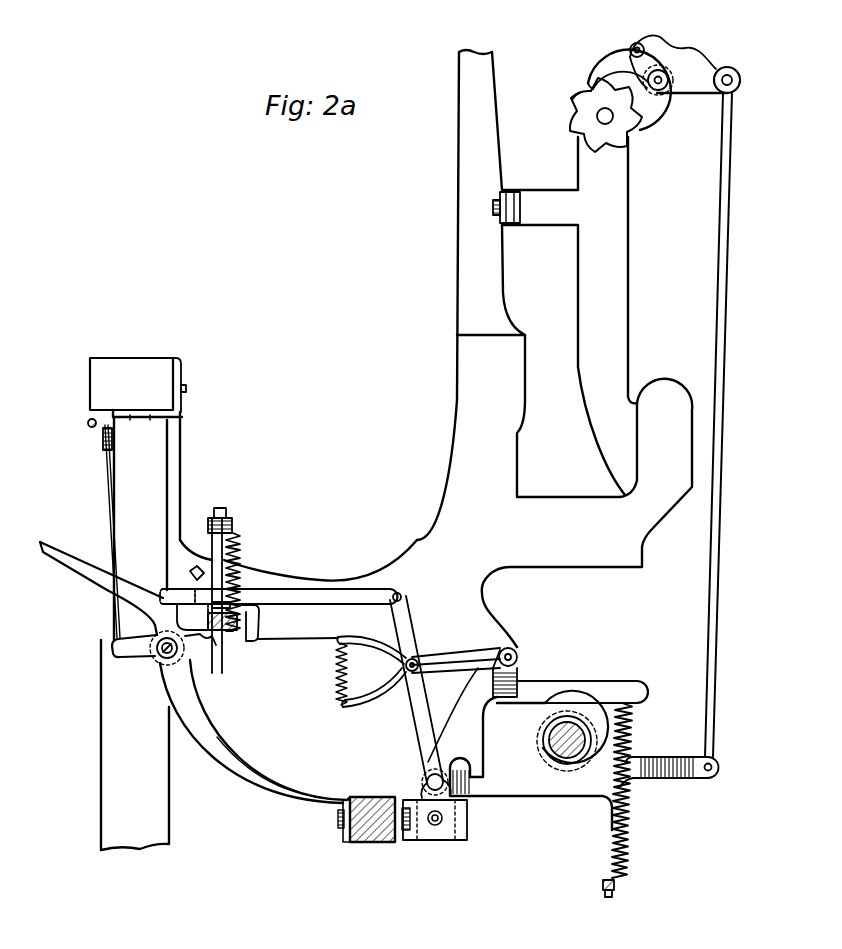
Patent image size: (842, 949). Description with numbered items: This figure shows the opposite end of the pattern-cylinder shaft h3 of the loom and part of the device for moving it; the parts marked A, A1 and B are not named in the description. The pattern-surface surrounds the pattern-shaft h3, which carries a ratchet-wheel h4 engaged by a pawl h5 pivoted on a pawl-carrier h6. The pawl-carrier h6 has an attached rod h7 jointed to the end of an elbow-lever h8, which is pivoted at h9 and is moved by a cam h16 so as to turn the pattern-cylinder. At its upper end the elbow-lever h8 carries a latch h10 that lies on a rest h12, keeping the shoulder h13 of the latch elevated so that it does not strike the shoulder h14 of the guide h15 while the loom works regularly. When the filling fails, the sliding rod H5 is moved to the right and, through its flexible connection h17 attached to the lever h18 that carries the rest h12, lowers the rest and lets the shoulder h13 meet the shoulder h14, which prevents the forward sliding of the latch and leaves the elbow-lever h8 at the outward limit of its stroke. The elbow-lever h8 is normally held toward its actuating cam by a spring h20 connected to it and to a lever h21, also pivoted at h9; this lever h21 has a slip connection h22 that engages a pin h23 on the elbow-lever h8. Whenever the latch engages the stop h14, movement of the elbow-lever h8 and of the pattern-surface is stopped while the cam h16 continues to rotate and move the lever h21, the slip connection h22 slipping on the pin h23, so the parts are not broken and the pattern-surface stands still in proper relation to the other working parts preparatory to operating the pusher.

The frame A is at (396, 450).
The box on frame A1 is at (130, 365).
The sliding rod H5 is at (88, 423).
The shaft B is at (546, 739).
The pattern-shaft h3 is at (597, 117).
The ratchet-wheel h4 is at (577, 95).
The pawl h5 is at (601, 66).
The pawl-carrier h6 is at (700, 70).
The rod h7 is at (727, 202).
The elbow-lever h8 is at (668, 758).
The pivot h9 is at (427, 782).
The latch h10 is at (332, 593).
The rest h12 is at (250, 641).
The shoulder of the latch h13 is at (160, 660).
The shoulder of the guide h14 is at (178, 642).
The guide h15 is at (222, 570).
The cam h16 is at (608, 732).
The flexible connection h17 is at (112, 503).
The lever h18 is at (128, 655).
The spring h20 is at (623, 812).
The lever h21 is at (574, 683).
The slip connection h22 is at (452, 655).
The pin h23 is at (377, 671).